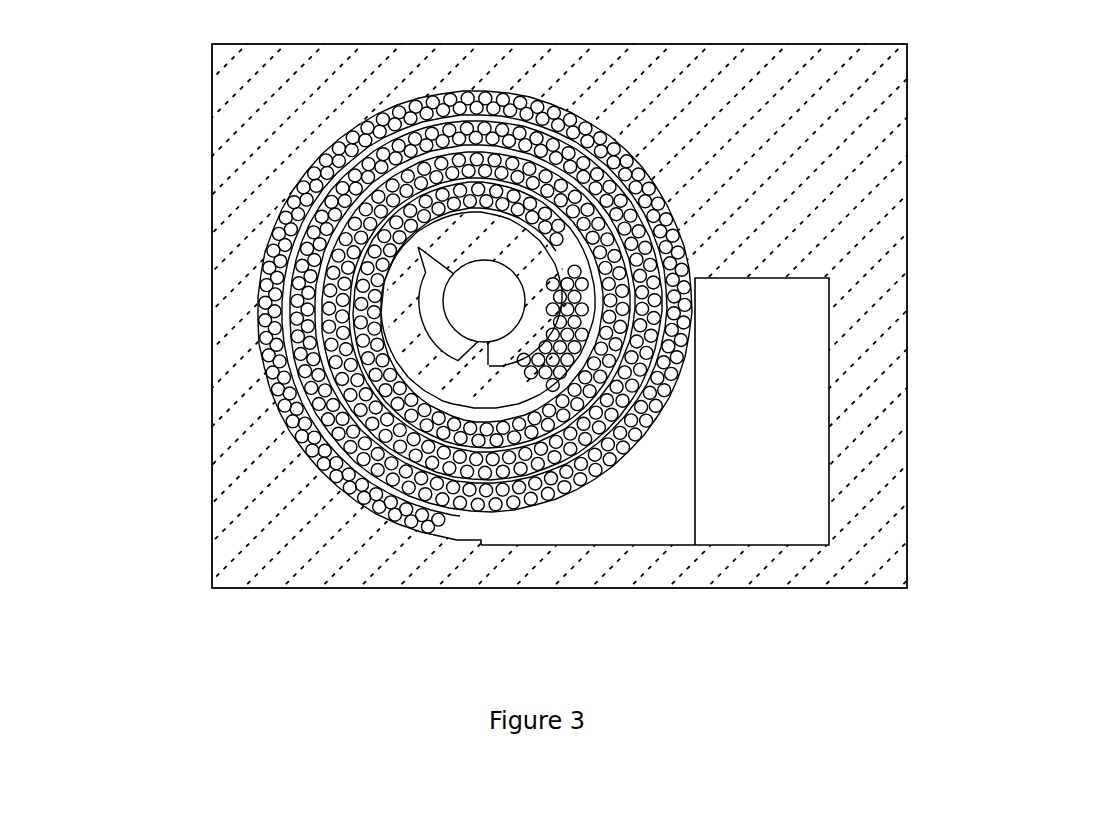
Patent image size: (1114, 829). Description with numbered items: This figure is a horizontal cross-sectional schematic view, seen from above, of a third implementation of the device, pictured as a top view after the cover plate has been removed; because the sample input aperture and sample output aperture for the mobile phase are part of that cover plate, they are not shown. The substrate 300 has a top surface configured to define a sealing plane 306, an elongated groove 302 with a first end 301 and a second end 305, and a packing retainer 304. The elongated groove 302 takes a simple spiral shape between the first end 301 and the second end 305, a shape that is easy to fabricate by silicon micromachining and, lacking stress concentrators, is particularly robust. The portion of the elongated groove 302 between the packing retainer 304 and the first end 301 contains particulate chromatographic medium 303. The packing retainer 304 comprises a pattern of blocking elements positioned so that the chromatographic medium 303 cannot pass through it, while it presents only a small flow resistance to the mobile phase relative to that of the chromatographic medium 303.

The substrate 300 is at (920, 96).
The first end 301 is at (782, 360).
The elongated groove 302 is at (482, 532).
The particulate chromatographic medium 303 is at (263, 357).
The packing retainer 304 is at (580, 337).
The second end 305 is at (472, 298).
The sealing plane 306 is at (843, 208).